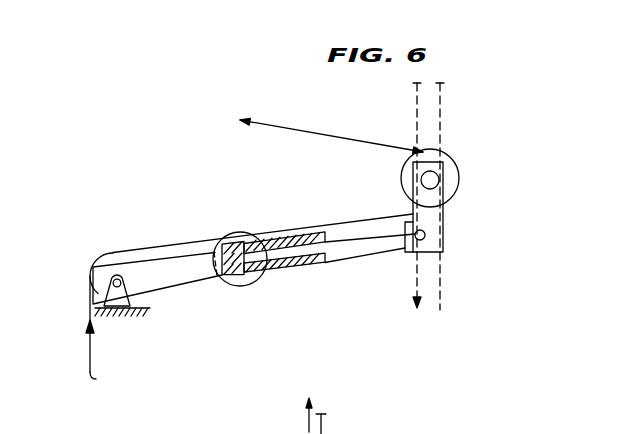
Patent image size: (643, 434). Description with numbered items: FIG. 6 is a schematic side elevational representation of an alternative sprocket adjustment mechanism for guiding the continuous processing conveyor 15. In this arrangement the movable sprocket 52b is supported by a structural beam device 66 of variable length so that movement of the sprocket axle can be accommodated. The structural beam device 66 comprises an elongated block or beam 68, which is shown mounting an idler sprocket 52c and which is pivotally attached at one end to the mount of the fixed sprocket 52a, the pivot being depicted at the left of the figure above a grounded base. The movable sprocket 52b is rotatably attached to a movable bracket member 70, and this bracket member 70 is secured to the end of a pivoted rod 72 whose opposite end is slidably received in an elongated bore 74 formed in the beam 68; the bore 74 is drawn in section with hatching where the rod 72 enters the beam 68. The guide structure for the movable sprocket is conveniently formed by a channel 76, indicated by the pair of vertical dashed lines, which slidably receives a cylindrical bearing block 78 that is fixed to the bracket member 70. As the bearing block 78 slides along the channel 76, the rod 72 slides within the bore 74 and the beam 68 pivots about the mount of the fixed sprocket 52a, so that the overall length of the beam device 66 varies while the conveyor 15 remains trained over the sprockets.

The continuous processing conveyor 15 is at (286, 126).
The channel 76 is at (444, 103).
The movable sprocket 52b is at (457, 176).
The cylindrical bearing block 78 is at (420, 177).
The movable bracket member 70 is at (443, 221).
The pivoted rod 72 is at (358, 244).
The structural beam device 66 is at (302, 268).
The elongated bore 74 is at (275, 259).
The elongated block or beam 68 is at (190, 268).
The fixed sprocket 52a is at (133, 296).
The idler sprocket 52c is at (233, 242).